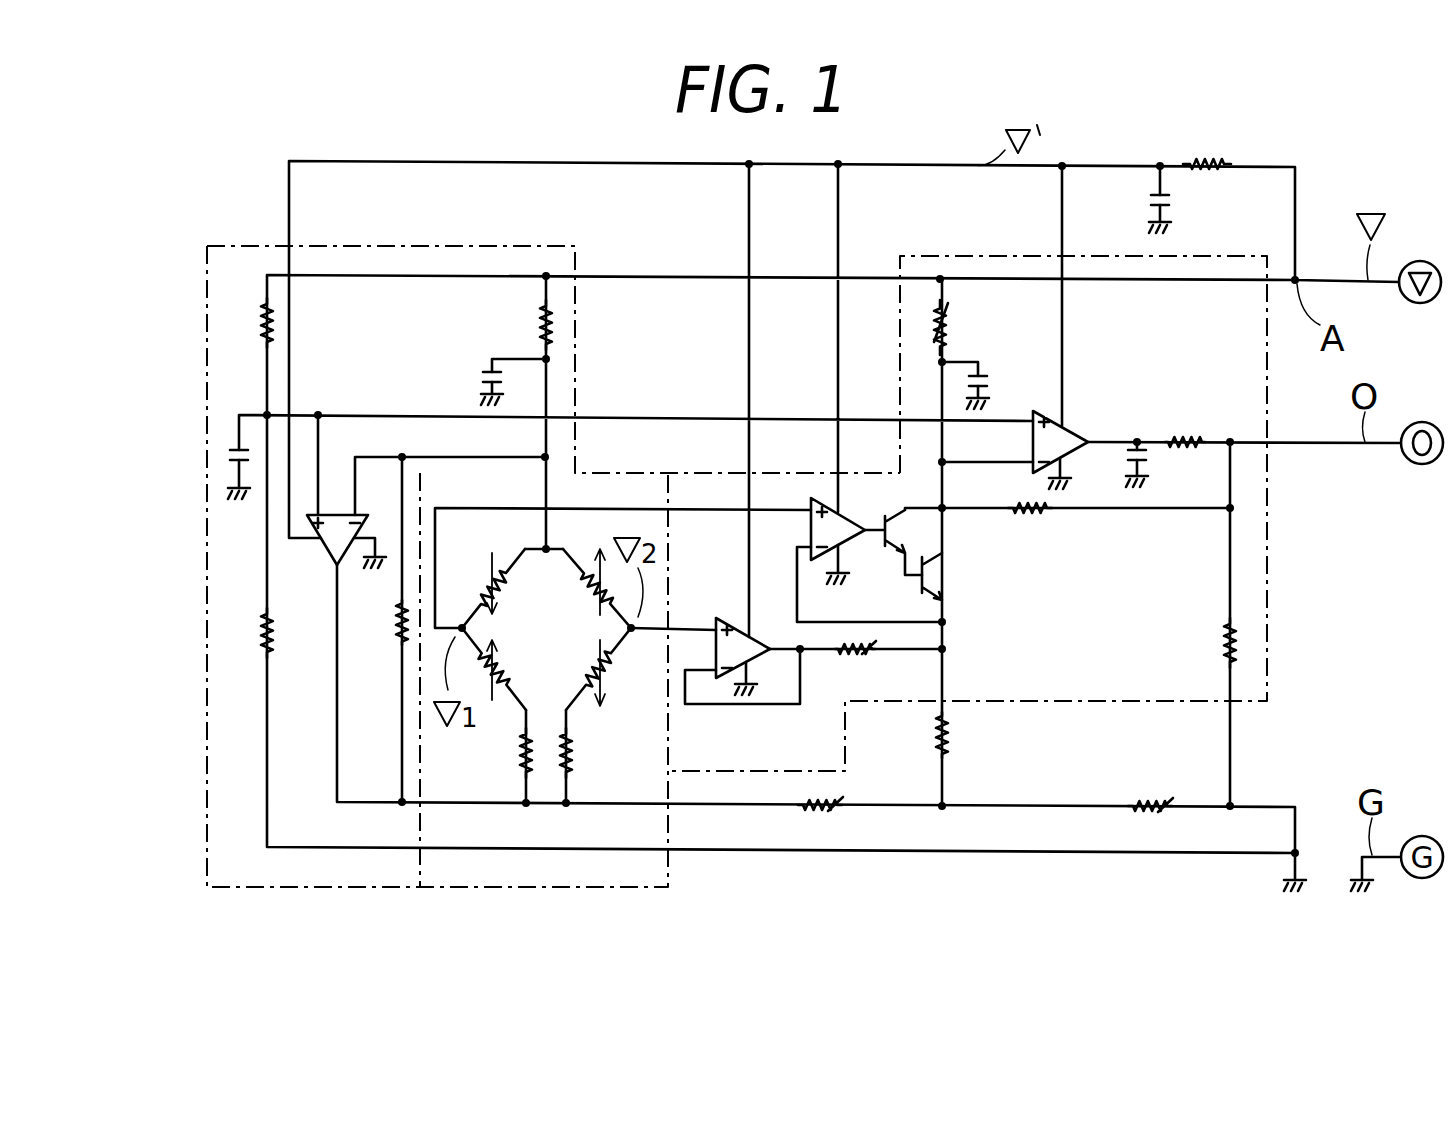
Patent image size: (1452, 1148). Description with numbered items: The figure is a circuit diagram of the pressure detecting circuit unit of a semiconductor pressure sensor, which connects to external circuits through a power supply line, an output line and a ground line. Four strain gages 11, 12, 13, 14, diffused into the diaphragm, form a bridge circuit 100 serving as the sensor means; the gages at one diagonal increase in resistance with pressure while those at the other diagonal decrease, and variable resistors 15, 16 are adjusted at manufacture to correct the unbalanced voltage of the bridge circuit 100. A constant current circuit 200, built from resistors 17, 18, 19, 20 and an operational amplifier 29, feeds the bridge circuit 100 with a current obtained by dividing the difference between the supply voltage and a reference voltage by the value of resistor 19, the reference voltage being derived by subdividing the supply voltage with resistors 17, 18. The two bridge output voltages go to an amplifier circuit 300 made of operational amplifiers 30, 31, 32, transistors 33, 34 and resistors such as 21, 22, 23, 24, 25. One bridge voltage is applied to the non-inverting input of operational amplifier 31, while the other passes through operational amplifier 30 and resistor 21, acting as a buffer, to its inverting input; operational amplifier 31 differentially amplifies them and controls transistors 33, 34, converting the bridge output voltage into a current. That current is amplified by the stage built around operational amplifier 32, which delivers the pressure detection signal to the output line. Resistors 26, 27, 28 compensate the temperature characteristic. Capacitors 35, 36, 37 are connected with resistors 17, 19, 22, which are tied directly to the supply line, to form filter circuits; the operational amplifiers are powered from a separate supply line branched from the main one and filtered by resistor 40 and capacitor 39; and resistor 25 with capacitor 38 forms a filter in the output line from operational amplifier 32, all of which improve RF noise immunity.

The strain gage 11 is at (487, 583).
The strain gage 12 is at (592, 588).
The strain gage 13 is at (502, 677).
The strain gage 14 is at (607, 675).
The variable resistor 15 is at (520, 768).
The variable resistor 16 is at (577, 757).
The resistor 17 is at (260, 328).
The resistor 18 is at (258, 630).
The resistor 19 is at (535, 322).
The resistor 20 is at (393, 628).
The resistor 21 is at (848, 663).
The resistor 22 is at (948, 333).
The resistor 23 is at (1037, 514).
The resistor 24 is at (1213, 647).
The resistor 25 is at (1182, 438).
The resistor 26 is at (930, 738).
The resistor 27 is at (840, 812).
The resistor 28 is at (1158, 814).
The operational amplifier 29 is at (330, 548).
The operational amplifier 30 is at (732, 618).
The operational amplifier 31 is at (850, 520).
The operational amplifier 32 is at (1080, 417).
The transistor 33 is at (890, 548).
The transistor 34 is at (933, 580).
The capacitor 35 is at (222, 458).
The capacitor 36 is at (478, 378).
The capacitor 37 is at (990, 380).
The capacitor 38 is at (1150, 460).
The capacitor 39 is at (1173, 203).
The resistor 40 is at (1203, 177).
The bridge circuit 100 is at (668, 875).
The constant current circuit 200 is at (545, 243).
The amplifier circuit 300 is at (972, 253).